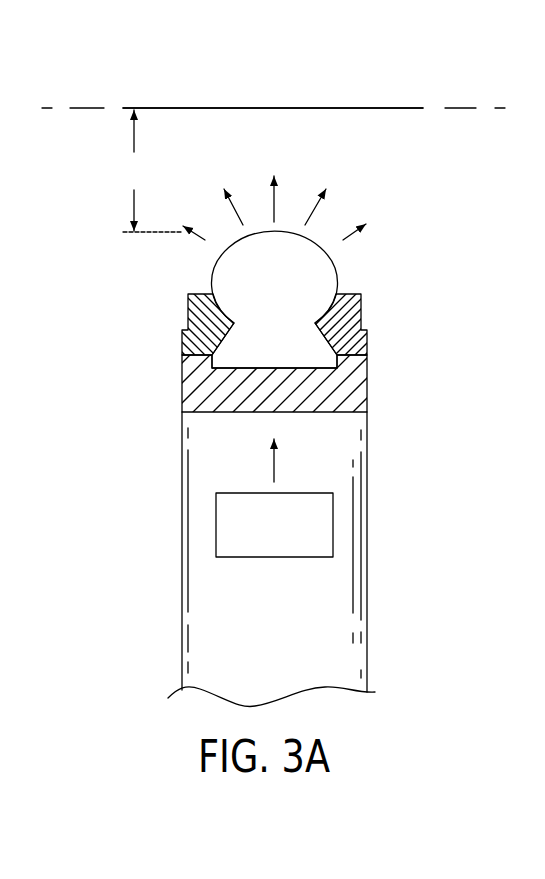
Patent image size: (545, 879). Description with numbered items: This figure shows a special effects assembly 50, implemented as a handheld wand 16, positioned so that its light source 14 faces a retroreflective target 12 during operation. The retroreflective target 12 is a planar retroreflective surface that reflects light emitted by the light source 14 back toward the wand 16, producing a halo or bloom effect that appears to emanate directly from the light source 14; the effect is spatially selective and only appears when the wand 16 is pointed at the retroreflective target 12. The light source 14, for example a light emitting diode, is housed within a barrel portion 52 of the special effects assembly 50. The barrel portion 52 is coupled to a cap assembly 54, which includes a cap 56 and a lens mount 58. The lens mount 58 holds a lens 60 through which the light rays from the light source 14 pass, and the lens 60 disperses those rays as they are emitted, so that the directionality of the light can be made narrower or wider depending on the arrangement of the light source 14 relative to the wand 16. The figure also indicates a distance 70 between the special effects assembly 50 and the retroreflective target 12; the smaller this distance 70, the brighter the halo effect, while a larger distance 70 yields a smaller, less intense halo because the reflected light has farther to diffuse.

The retroreflective target 12 is at (350, 108).
The light source 14 is at (273, 557).
The wand 16 is at (273, 557).
The special effects assembly 50 is at (418, 250).
The barrel portion 52 is at (195, 568).
The cap assembly 54 is at (238, 321).
The cap 56 is at (271, 383).
The lens mount 58 is at (187, 338).
The lens 60 is at (222, 280).
The distance 70 is at (152, 171).